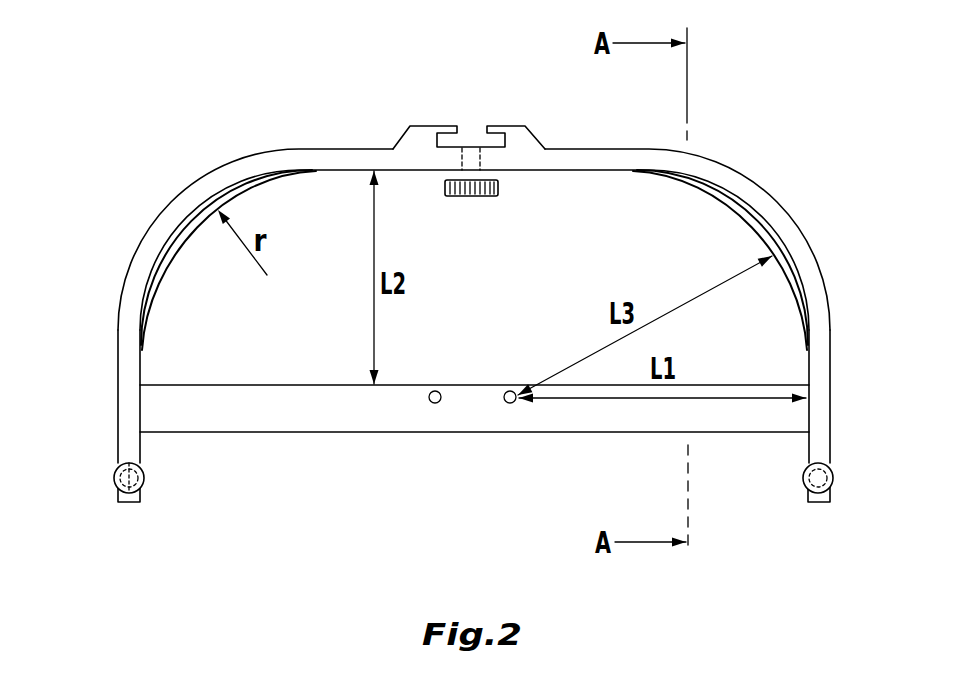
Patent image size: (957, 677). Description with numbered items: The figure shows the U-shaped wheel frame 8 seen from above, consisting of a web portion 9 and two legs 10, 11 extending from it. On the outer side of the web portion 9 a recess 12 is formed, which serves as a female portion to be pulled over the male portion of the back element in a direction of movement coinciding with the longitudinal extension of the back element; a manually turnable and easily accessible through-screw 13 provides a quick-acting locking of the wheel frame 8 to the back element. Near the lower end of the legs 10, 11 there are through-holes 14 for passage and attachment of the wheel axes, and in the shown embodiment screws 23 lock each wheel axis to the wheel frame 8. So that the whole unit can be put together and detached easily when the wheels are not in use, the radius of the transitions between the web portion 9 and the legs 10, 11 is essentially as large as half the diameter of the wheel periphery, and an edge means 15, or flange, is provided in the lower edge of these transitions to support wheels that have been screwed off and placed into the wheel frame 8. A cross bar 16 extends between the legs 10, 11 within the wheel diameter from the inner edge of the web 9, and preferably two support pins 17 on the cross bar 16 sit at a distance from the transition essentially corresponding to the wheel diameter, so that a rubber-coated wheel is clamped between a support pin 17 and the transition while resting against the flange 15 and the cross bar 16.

The wheel frame 8 is at (474, 264).
The web portion 9 is at (261, 160).
The leg 10 is at (818, 356).
The leg 11 is at (128, 350).
The recess 12 is at (490, 143).
The through-screw 13 is at (481, 197).
The through-hole 14 is at (112, 480).
The edge means 15 is at (180, 243).
The cross bar 16 is at (342, 410).
The support pin 17 is at (507, 390).
The screw 23 is at (146, 478).